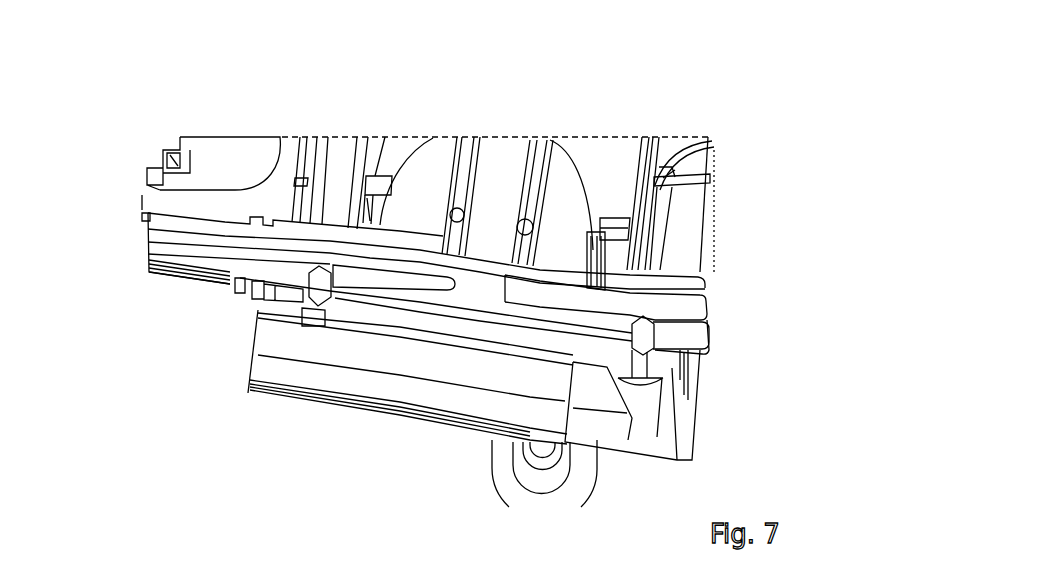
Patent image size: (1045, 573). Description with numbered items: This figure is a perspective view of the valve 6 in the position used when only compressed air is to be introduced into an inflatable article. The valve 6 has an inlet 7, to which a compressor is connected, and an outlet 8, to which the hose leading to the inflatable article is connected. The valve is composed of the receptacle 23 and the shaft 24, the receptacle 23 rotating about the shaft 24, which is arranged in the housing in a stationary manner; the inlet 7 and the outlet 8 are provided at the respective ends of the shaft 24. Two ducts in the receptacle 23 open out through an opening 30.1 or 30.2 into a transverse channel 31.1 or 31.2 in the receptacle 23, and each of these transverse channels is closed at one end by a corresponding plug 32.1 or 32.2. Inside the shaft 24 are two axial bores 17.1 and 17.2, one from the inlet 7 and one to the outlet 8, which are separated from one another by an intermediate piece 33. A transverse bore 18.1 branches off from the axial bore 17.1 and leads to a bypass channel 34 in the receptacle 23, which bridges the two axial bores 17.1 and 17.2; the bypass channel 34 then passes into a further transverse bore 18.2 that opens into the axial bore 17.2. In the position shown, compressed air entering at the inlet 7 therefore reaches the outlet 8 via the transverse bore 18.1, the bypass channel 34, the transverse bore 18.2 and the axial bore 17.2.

The valve 6 is at (393, 136).
The inlet 7 is at (146, 242).
The outlet 8 is at (710, 325).
The axial bore 17.1 is at (160, 238).
The axial bore 17.2 is at (699, 320).
The transverse bore 18.1 is at (316, 287).
The transverse bore 18.2 is at (657, 337).
The receptacle 23 is at (584, 165).
The shaft 24 is at (213, 262).
The opening 30.1 is at (455, 208).
The opening 30.2 is at (528, 220).
The transverse channel 31.1 is at (467, 175).
The transverse channel 31.2 is at (538, 178).
The plug 32.1 is at (462, 142).
The plug 32.2 is at (539, 142).
The intermediate piece 33 is at (487, 283).
The bypass channel 34 is at (423, 327).